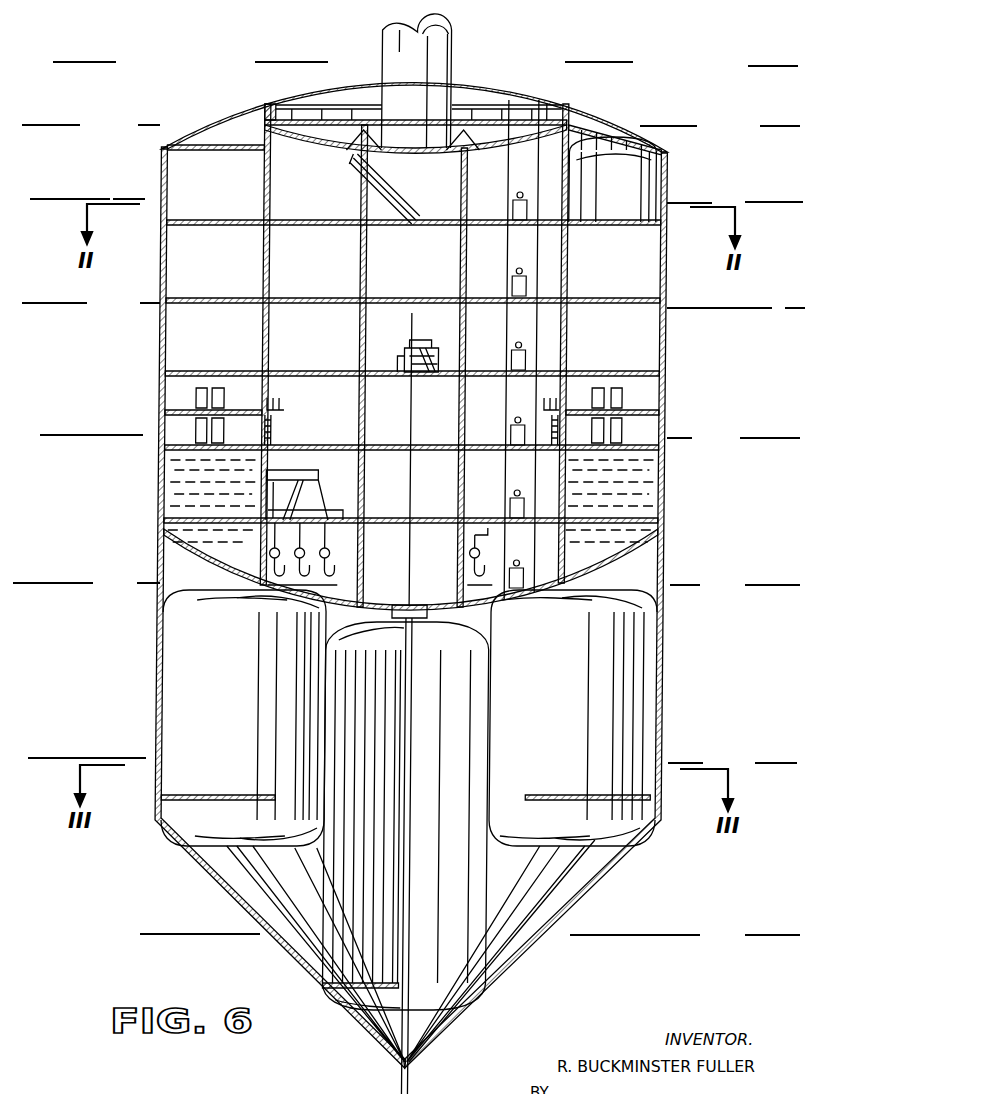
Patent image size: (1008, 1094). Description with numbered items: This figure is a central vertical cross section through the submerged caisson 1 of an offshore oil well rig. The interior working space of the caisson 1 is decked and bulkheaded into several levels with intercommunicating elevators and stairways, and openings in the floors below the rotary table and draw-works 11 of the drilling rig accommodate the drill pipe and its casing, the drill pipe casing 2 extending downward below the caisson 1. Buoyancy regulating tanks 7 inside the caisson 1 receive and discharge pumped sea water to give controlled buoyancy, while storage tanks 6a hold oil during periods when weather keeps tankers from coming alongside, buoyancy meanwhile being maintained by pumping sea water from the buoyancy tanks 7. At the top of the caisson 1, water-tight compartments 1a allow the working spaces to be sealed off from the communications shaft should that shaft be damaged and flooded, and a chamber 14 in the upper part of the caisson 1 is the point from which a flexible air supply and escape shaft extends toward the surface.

The caisson 1 is at (428, 554).
The water-tight compartments 1a is at (487, 92).
The drill pipe casing 2 is at (416, 1093).
The storage tanks 6a is at (660, 496).
The buoyancy regulating tanks 7 is at (652, 751).
The rotary table and draw-works 11 is at (430, 352).
The chamber 14 is at (655, 193).